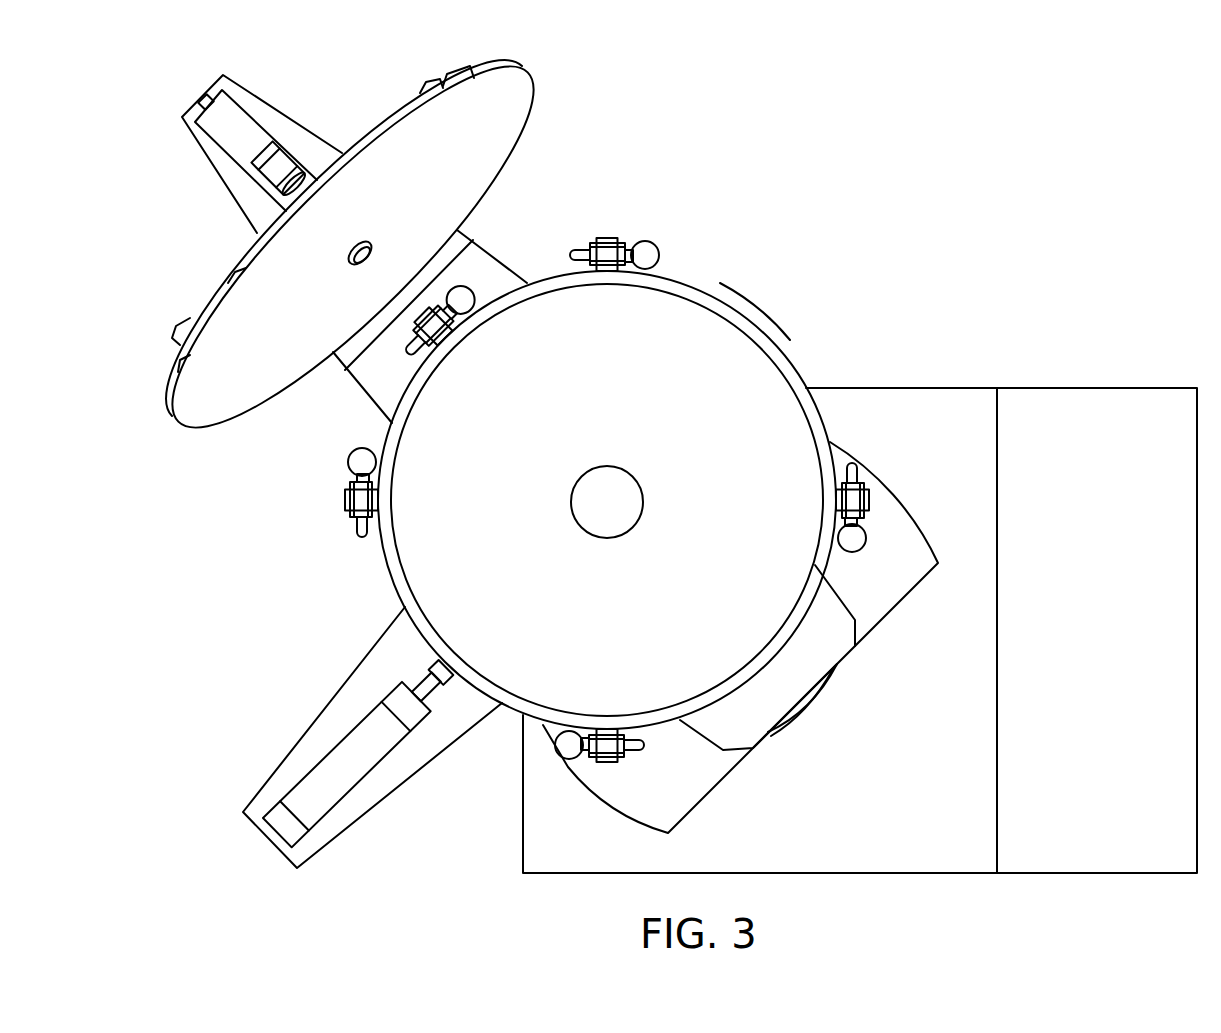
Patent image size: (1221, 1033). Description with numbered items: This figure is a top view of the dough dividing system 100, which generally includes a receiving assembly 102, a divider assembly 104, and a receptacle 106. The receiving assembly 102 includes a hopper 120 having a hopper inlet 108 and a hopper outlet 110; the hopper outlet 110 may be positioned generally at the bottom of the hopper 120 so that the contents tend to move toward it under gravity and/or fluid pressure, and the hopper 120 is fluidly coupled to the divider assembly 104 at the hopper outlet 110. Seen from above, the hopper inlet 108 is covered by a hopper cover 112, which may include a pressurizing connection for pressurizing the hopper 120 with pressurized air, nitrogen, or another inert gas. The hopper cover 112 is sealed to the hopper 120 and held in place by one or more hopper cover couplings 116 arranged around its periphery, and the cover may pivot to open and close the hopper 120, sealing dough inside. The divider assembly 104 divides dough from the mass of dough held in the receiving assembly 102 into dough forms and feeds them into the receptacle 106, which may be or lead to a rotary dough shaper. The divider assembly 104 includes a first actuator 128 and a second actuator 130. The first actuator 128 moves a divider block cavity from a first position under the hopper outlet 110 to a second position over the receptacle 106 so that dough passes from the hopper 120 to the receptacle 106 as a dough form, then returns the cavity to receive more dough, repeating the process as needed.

The dough dividing system 100 is at (1012, 168).
The receiving assembly 102 is at (512, 494).
The divider assembly 104 is at (351, 121).
The receptacle 106 is at (904, 524).
The hopper inlet 108 is at (720, 353).
The hopper outlet 110 is at (624, 488).
The hopper cover 112 is at (512, 108).
The hopper cover couplings 116 is at (646, 250).
The hopper 120 is at (786, 360).
The first actuator 128 is at (230, 148).
The second actuator 130 is at (330, 800).